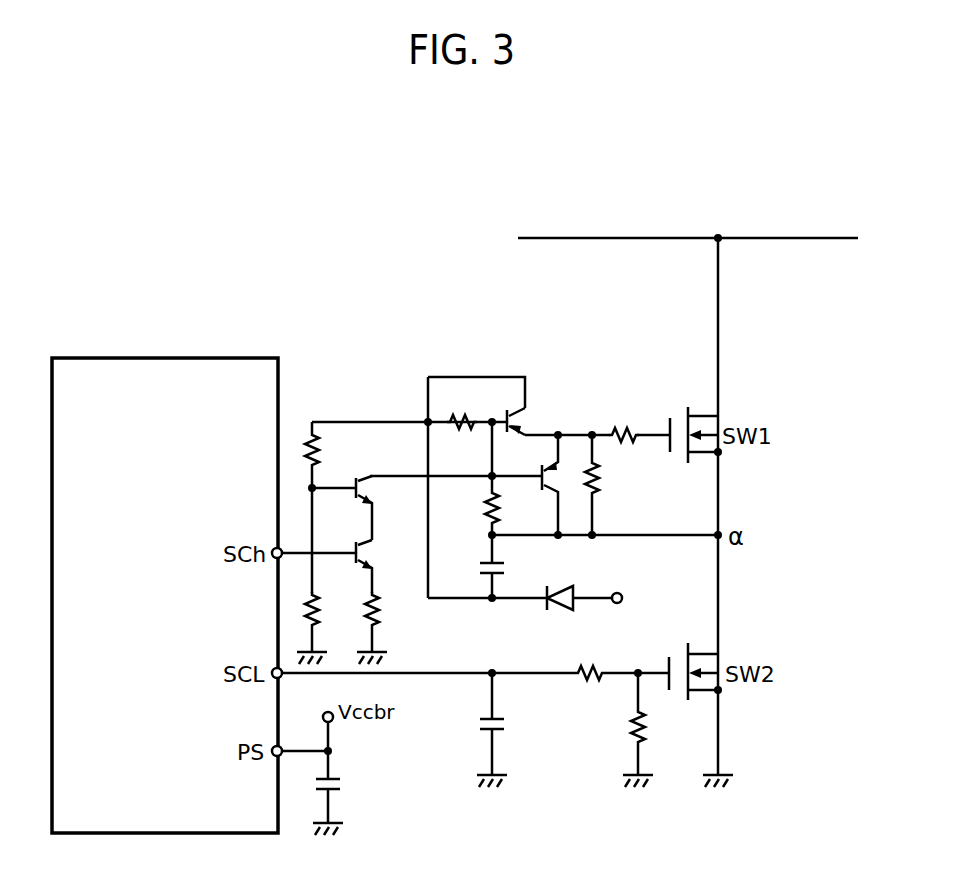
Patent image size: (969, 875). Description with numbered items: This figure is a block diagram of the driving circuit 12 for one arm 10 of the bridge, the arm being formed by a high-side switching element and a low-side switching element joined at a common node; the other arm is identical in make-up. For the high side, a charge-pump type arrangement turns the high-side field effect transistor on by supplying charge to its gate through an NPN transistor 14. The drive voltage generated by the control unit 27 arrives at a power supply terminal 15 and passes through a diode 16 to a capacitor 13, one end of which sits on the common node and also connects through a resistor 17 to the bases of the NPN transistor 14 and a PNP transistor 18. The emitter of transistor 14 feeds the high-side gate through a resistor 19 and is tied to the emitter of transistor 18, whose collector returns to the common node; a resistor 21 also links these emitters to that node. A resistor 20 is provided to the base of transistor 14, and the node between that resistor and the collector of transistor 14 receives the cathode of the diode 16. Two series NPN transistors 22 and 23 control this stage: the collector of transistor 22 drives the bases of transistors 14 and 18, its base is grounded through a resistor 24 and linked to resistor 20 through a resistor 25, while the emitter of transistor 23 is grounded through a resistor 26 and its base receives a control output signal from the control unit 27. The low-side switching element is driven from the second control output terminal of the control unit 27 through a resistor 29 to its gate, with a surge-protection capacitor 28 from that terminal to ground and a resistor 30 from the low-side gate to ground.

The arm 10 is at (834, 436).
The driving circuit 12 is at (290, 291).
The capacitor 13 is at (485, 566).
The NPN transistor 14 is at (520, 416).
The power supply terminal 15 is at (617, 592).
The diode 16 is at (558, 609).
The resistor 17 is at (485, 510).
The PNP transistor 18 is at (547, 488).
The resistor 19 is at (622, 420).
The resistor 20 is at (470, 417).
The resistor 21 is at (602, 478).
The NPN transistor 22 is at (364, 480).
The NPN transistor 23 is at (365, 552).
The resistor 24 is at (320, 607).
The resistor 25 is at (326, 446).
The resistor 26 is at (382, 612).
The control unit 27 is at (232, 358).
The capacitor 28 is at (498, 730).
The resistor 29 is at (596, 660).
The resistor 30 is at (646, 728).